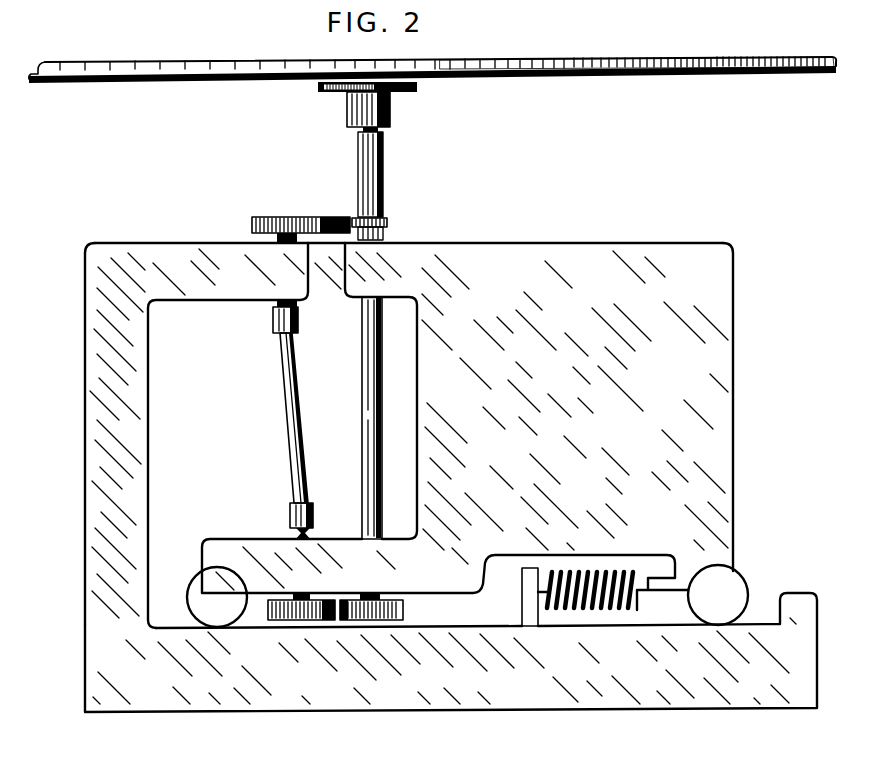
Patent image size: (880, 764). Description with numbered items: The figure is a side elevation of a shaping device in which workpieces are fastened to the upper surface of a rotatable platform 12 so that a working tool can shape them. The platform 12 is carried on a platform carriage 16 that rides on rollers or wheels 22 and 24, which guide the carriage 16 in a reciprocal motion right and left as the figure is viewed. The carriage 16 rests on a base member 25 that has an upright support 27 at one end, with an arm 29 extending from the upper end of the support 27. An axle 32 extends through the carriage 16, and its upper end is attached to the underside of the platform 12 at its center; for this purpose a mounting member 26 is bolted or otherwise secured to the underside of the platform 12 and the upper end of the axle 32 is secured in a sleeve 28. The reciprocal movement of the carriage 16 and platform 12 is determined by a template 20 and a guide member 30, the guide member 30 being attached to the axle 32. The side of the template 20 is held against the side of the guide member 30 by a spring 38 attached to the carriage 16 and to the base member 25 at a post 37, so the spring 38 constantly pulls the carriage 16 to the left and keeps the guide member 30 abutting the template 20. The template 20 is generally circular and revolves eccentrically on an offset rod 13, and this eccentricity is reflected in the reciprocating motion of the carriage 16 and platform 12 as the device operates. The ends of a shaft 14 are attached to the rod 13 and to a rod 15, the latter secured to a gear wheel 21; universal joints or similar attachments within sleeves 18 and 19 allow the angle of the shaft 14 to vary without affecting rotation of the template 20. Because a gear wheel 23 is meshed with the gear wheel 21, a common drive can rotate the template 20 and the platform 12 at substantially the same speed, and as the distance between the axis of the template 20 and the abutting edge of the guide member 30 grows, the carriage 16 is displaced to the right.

The platform 12 is at (605, 58).
The offset rod 13 is at (276, 304).
The shaft 14 is at (283, 366).
The rod 15 is at (296, 537).
The platform carriage 16 is at (733, 410).
The sleeve 18 is at (273, 316).
The sleeve 19 is at (290, 515).
The template 20 is at (273, 216).
The gear wheel 21 is at (290, 620).
The roller 22 is at (747, 583).
The gear wheel 23 is at (374, 620).
The roller 24 is at (190, 580).
The base member 25 is at (817, 665).
The mounting member 26 is at (418, 86).
The upright support 27 is at (148, 410).
The sleeve 28 is at (347, 102).
The arm 29 is at (120, 243).
The guide member 30 is at (388, 222).
The axle 32 is at (362, 366).
The post 37 is at (525, 627).
The spring 38 is at (597, 610).